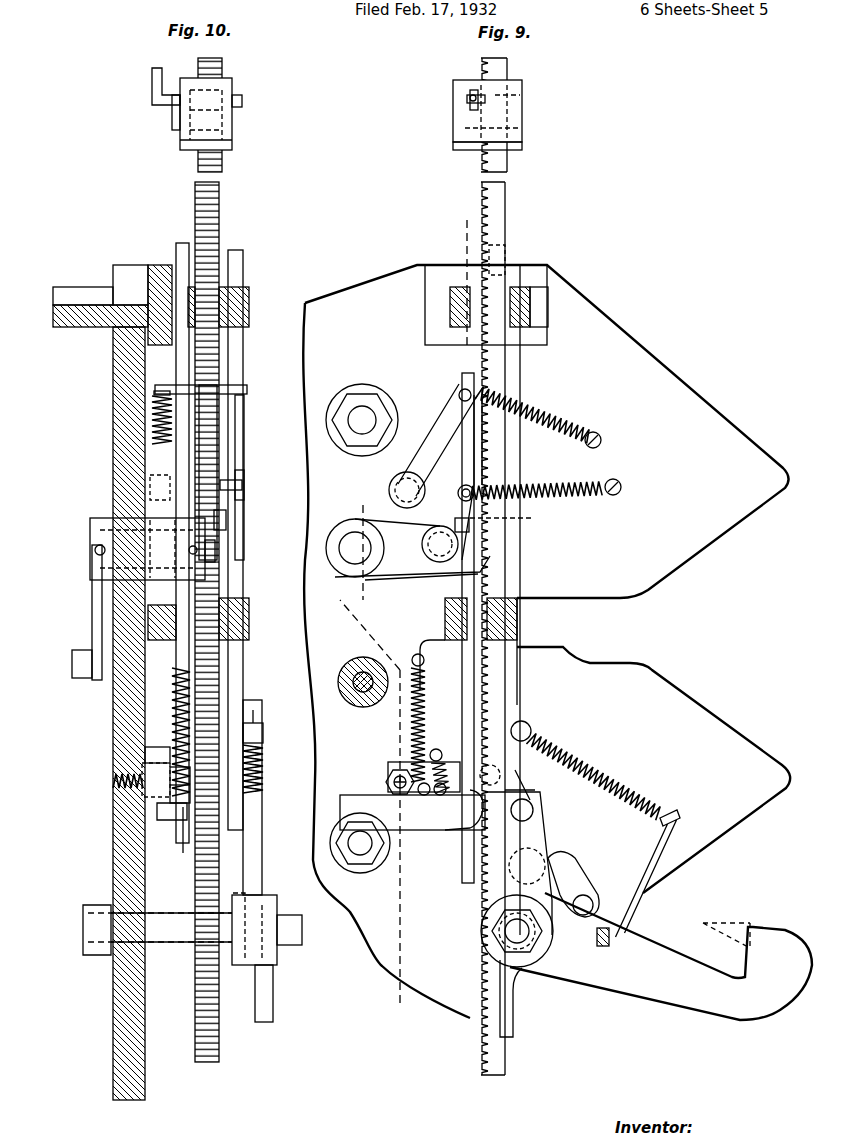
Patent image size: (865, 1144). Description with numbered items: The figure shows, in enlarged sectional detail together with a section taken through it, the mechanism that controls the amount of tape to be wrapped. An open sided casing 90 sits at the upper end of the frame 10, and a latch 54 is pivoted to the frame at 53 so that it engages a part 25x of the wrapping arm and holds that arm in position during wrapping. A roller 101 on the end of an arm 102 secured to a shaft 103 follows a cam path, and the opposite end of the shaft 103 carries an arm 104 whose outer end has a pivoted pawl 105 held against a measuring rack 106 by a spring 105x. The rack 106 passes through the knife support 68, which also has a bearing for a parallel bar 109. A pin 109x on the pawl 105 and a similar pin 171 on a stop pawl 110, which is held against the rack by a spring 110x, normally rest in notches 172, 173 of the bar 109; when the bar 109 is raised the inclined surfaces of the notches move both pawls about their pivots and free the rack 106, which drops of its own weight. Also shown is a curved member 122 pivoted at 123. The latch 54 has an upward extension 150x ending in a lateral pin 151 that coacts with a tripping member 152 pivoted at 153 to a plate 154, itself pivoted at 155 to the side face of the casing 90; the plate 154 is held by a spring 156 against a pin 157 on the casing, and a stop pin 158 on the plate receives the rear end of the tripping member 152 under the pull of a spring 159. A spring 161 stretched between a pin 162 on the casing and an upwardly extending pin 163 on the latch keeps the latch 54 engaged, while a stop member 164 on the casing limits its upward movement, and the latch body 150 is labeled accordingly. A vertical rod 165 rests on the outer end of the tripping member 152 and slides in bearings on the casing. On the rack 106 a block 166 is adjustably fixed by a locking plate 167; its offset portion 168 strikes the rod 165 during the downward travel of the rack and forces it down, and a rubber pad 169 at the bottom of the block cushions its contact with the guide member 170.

In FIG. 9, the frame 10 is at (392, 1004).
In FIG. 9, the part of the arm 25x is at (737, 921).
In FIG. 10, the pivot 53 is at (302, 935).
In FIG. 9, the pivot 53 is at (504, 933).
In FIG. 10, the latch 54 is at (262, 860).
In FIG. 9, the latch 54 is at (627, 990).
In FIG. 10, the knife support 68 is at (249, 630).
In FIG. 9, the knife support 68 is at (518, 628).
In FIG. 10, the open sided casing 90 is at (80, 287).
In FIG. 9, the open sided casing 90 is at (630, 336).
In FIG. 10, the roller 101 is at (75, 675).
In FIG. 10, the arm 102 is at (92, 610).
In FIG. 10, the shaft 103 is at (92, 560).
In FIG. 9, the shaft 103 is at (352, 545).
In FIG. 10, the arm 104 is at (215, 560).
In FIG. 9, the arm 104 is at (407, 585).
In FIG. 10, the pawl 105 is at (160, 475).
In FIG. 9, the pawl 105 is at (462, 494).
In FIG. 9, the spring 105x is at (580, 497).
In FIG. 10, the measuring rack 106 is at (221, 219).
In FIG. 9, the measuring rack 106 is at (507, 213).
In FIG. 10, the parallel bar 109 is at (244, 350).
In FIG. 9, the parallel bar 109 is at (476, 720).
In FIG. 10, the pin 109x is at (244, 488).
In FIG. 9, the pin 109x is at (474, 490).
In FIG. 10, the stop pawl 110 is at (217, 425).
In FIG. 9, the stop pawl 110 is at (437, 425).
In FIG. 10, the spring 110x is at (152, 420).
In FIG. 9, the spring 110x is at (557, 416).
In FIG. 9, the curved member 122 is at (358, 700).
In FIG. 9, the pivot 123 is at (352, 672).
In FIG. 10, the lever 150 is at (262, 835).
In FIG. 9, the upward extension 150x is at (540, 836).
In FIG. 10, the lateral pin 151 is at (165, 820).
In FIG. 9, the lateral pin 151 is at (534, 810).
In FIG. 10, the tripping member 152 is at (184, 853).
In FIG. 9, the tripping member 152 is at (520, 786).
In FIG. 9, the pivot 153 is at (498, 770).
In FIG. 10, the plate 154 is at (160, 800).
In FIG. 9, the plate 154 is at (406, 770).
In FIG. 10, the pivot 155 is at (110, 783).
In FIG. 9, the pivot 155 is at (386, 782).
In FIG. 10, the spring 156 is at (172, 712).
In FIG. 9, the spring 156 is at (410, 720).
In FIG. 10, the pin 157 is at (145, 757).
In FIG. 9, the pin 157 is at (437, 750).
In FIG. 9, the stop pin 158 is at (468, 828).
In FIG. 9, the spring 159 is at (447, 832).
In FIG. 10, the spring 161 is at (263, 768).
In FIG. 9, the spring 161 is at (612, 790).
In FIG. 10, the pin 162 is at (256, 723).
In FIG. 9, the pin 162 is at (531, 731).
In FIG. 9, the upwardly extending pin 163 is at (660, 838).
In FIG. 10, the stop member 164 is at (277, 900).
In FIG. 9, the stop member 164 is at (585, 888).
In FIG. 10, the vertical rod 165 is at (176, 248).
In FIG. 9, the vertical rod 165 is at (498, 248).
In FIG. 9, the block 166 is at (524, 110).
In FIG. 10, the locking plate 167 is at (152, 104).
In FIG. 9, the locking plate 167 is at (465, 103).
In FIG. 10, the offset portion 168 is at (172, 128).
In FIG. 10, the rubber pad 169 is at (234, 146).
In FIG. 9, the rubber pad 169 is at (524, 146).
In FIG. 10, the guide member 170 is at (250, 300).
In FIG. 9, the guide member 170 is at (450, 310).
In FIG. 10, the pin 171 is at (248, 388).
In FIG. 9, the pin 171 is at (460, 390).
In FIG. 10, the notch 172 is at (226, 530).
In FIG. 9, the notch 172 is at (472, 524).
In FIG. 10, the notch 173 is at (244, 430).
In FIG. 9, the notch 173 is at (484, 435).